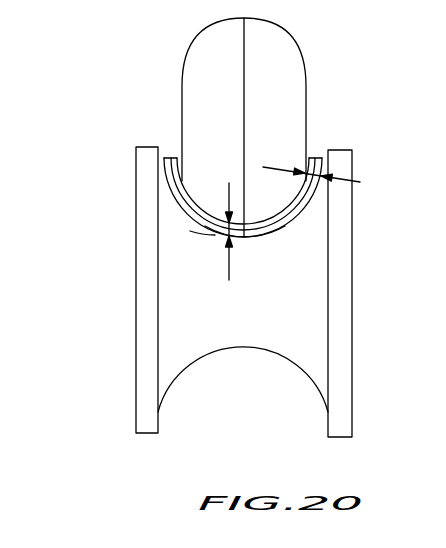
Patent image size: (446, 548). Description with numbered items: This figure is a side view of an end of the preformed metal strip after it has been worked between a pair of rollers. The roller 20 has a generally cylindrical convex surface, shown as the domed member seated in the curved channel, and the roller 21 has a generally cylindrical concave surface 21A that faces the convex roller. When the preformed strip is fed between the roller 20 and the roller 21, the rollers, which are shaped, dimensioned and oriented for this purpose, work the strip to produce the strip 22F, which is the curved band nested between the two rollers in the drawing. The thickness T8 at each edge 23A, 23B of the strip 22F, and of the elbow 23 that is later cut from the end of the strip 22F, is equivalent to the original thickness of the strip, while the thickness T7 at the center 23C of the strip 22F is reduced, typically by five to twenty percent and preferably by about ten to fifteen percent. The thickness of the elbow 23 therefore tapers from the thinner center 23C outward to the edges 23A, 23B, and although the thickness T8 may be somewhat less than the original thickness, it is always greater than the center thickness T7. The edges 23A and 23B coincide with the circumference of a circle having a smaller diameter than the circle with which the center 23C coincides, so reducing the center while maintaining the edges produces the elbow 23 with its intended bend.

The roller 20 is at (317, 101).
The roller 21 is at (363, 425).
The generally cylindrical concave surface 21A is at (223, 224).
The strip 22F is at (200, 226).
The elbow 23 is at (302, 217).
The edge 23A is at (172, 156).
The edge 23B is at (315, 157).
The center 23C is at (261, 236).
The thickness of the center of strip 22F T7 is at (228, 259).
The thickness of each edge of strip 22F T8 is at (361, 183).